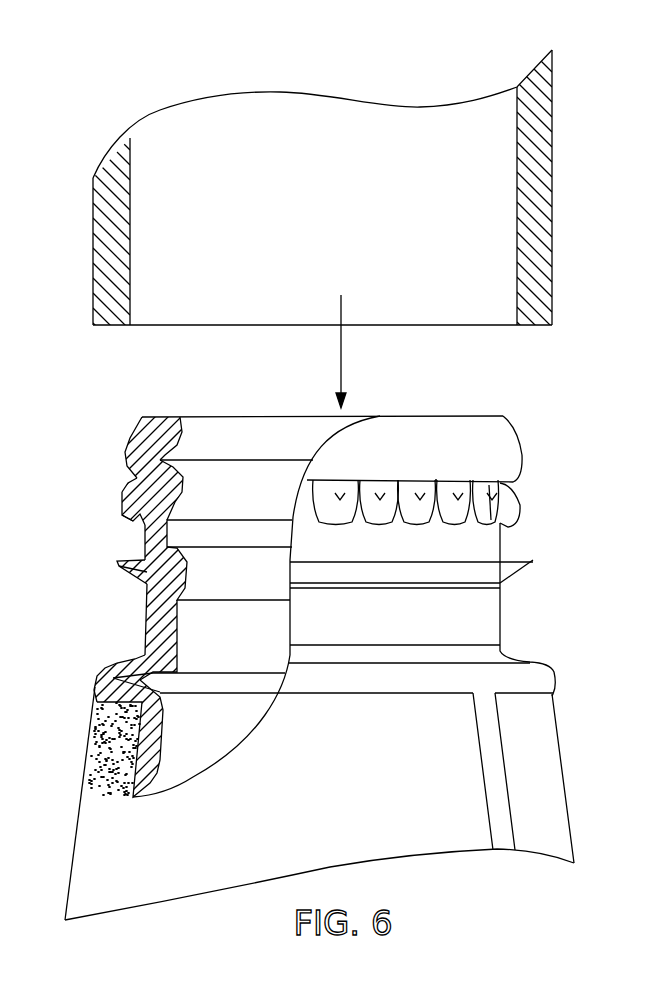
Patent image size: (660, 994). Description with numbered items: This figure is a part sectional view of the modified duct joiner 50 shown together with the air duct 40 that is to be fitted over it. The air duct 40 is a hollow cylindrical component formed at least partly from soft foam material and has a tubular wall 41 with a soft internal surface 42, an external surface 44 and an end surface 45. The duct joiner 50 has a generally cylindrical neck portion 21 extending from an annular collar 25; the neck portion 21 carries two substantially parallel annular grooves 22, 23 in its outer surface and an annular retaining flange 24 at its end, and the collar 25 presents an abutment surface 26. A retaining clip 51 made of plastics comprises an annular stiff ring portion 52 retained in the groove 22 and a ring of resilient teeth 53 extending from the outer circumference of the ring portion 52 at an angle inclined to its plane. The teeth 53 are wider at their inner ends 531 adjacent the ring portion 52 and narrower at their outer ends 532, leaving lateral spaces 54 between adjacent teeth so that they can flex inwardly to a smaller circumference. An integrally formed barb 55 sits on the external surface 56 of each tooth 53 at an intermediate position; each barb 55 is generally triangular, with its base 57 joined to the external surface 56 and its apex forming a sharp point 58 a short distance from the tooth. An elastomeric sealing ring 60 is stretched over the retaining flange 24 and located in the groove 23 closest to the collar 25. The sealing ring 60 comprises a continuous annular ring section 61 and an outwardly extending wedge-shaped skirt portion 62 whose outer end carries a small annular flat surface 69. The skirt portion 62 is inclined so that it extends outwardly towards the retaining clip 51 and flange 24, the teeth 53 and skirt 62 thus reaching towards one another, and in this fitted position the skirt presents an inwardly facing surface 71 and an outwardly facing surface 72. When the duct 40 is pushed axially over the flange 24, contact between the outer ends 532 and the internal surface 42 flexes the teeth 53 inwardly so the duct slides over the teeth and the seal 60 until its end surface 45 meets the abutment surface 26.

The air duct 40 is at (563, 224).
The tubular wall 41 is at (543, 125).
The internal surface 42 is at (515, 287).
The external surface 44 is at (552, 267).
The end surface 45 is at (543, 326).
The modified duct joiner 50 is at (520, 613).
The retaining clip 51 is at (530, 482).
The ring portion 52 is at (173, 460).
The resilient teeth 53 is at (520, 506).
The inner ends of teeth 531 is at (457, 487).
The outer ends of teeth 532 is at (423, 525).
The lateral spaces 54 is at (473, 523).
The barb 55 is at (335, 525).
The external surface of tooth 56 is at (125, 507).
The base of barb 57 is at (492, 493).
The sharp point 58 is at (378, 523).
The annular flat surface 69 is at (533, 560).
The sealing ring 60 is at (532, 576).
The abutment surface 26 is at (513, 658).
The retaining flange 24 is at (130, 447).
The annular groove 22 is at (187, 487).
The annular groove 23 is at (165, 565).
The ring section 61 is at (160, 573).
The skirt portion 62 is at (116, 578).
The inwardly facing surface 71 is at (137, 563).
The outwardly facing surface 72 is at (120, 573).
The neck portion 21 is at (155, 630).
The collar 25 is at (100, 680).